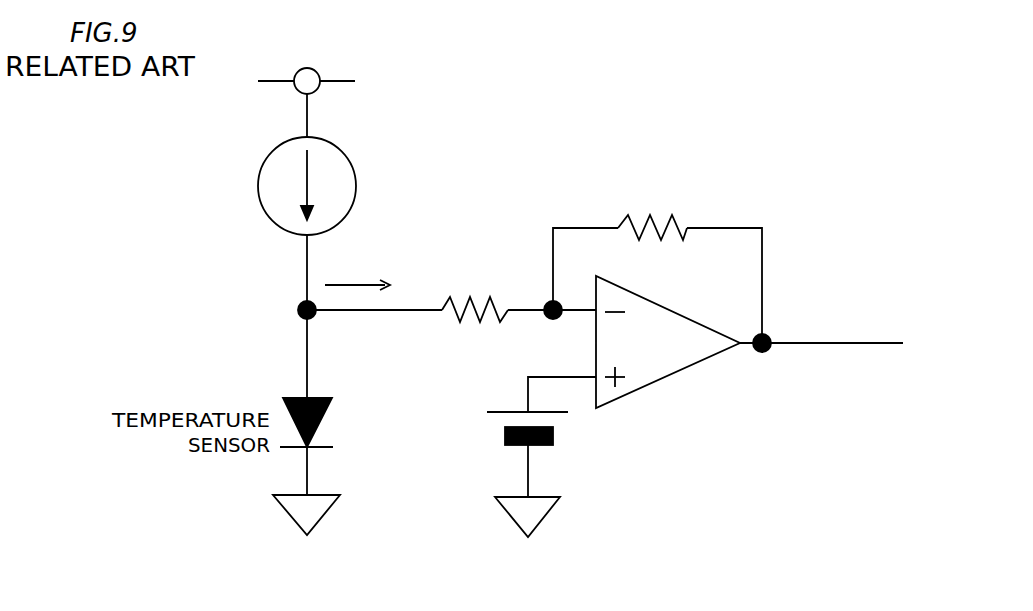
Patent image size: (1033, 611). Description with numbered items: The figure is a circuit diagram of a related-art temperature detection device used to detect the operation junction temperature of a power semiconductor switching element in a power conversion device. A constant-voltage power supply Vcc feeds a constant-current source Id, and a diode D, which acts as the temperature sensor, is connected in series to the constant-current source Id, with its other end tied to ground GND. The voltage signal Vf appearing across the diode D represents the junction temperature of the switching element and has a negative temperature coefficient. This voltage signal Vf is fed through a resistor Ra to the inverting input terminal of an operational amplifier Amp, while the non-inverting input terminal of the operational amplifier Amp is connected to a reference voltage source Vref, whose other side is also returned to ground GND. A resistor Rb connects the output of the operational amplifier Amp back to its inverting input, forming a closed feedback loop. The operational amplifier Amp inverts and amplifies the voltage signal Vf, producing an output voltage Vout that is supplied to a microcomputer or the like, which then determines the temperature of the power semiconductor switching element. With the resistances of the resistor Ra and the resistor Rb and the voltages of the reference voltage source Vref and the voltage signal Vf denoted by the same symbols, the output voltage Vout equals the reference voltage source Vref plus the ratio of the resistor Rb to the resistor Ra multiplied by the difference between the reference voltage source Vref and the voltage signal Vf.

The constant-voltage power supply Vcc is at (337, 99).
The constant-current source Id is at (286, 186).
The voltage signal Vf is at (357, 263).
The resistor Ra is at (430, 288).
The resistor Rb is at (657, 260).
The diode D is at (289, 397).
The ground GND is at (264, 515).
The operational amplifier Amp is at (646, 346).
The output voltage Vout is at (826, 323).
The reference voltage source Vref is at (508, 457).